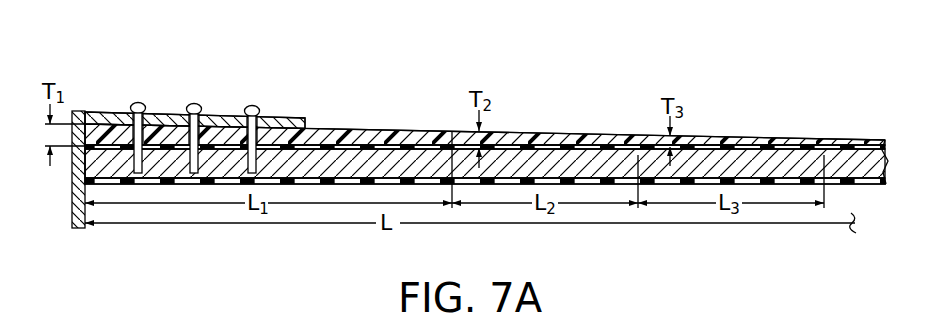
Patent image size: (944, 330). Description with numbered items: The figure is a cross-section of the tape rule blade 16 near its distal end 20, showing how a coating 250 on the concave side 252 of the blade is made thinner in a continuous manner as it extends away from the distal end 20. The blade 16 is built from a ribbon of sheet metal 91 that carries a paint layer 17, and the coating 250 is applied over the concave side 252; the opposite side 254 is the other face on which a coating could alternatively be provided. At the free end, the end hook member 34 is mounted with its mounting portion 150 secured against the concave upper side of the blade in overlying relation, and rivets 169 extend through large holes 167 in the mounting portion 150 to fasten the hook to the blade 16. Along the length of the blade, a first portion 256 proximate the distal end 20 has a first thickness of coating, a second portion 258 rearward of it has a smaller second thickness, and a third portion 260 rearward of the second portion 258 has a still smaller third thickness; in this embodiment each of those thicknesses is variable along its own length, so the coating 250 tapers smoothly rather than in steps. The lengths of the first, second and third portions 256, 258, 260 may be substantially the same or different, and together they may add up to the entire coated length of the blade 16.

The elongated blade 16 is at (602, 172).
The paint layer 17 is at (830, 146).
The distal end 20 is at (496, 152).
The end hook member 34 is at (72, 184).
The sheet metal 91 is at (497, 166).
The mounting portion 150 is at (101, 113).
The holes 167 is at (146, 138).
The rivets 169 is at (135, 103).
The coating 250 is at (358, 130).
The concave side 252 is at (872, 140).
The side 254 is at (872, 184).
The first portion 256 is at (413, 132).
The second portion 258 is at (590, 135).
The third portion 260 is at (775, 140).